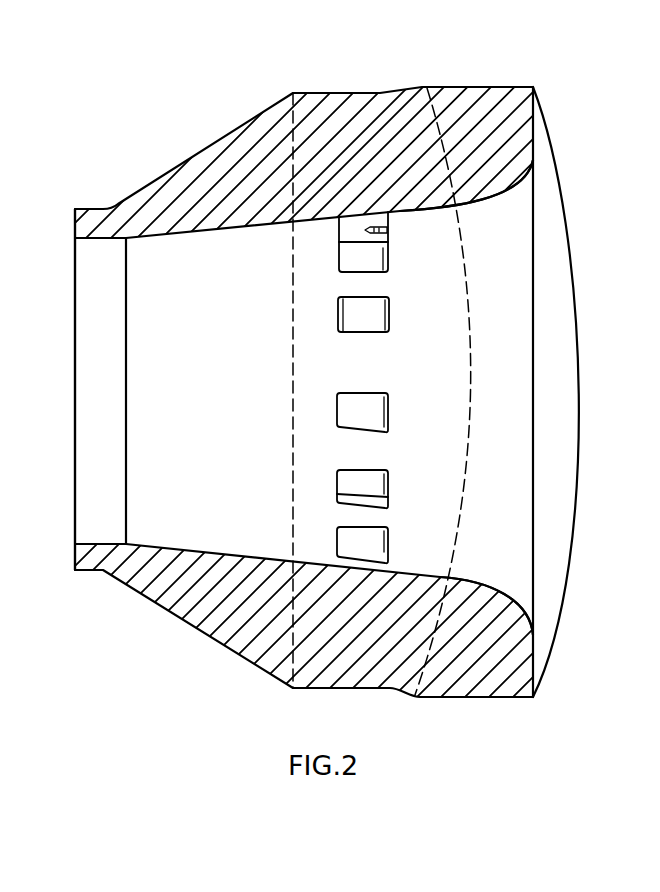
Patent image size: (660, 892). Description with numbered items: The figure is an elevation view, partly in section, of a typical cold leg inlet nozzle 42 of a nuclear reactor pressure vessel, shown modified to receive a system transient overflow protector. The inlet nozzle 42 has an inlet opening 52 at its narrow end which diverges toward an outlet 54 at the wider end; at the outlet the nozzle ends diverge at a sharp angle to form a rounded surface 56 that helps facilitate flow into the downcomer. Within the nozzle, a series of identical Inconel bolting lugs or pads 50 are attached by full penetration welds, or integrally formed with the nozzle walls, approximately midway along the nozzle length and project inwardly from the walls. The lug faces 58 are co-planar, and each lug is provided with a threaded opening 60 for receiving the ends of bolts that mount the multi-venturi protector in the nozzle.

The inlet nozzle 42 is at (484, 87).
The bolting lugs or pads 50 is at (377, 262).
The inlet opening 52 is at (88, 271).
The outlet 54 is at (527, 272).
The rounded surface 56 is at (523, 190).
The lug faces 58 is at (390, 420).
The threaded opening 60 is at (390, 229).